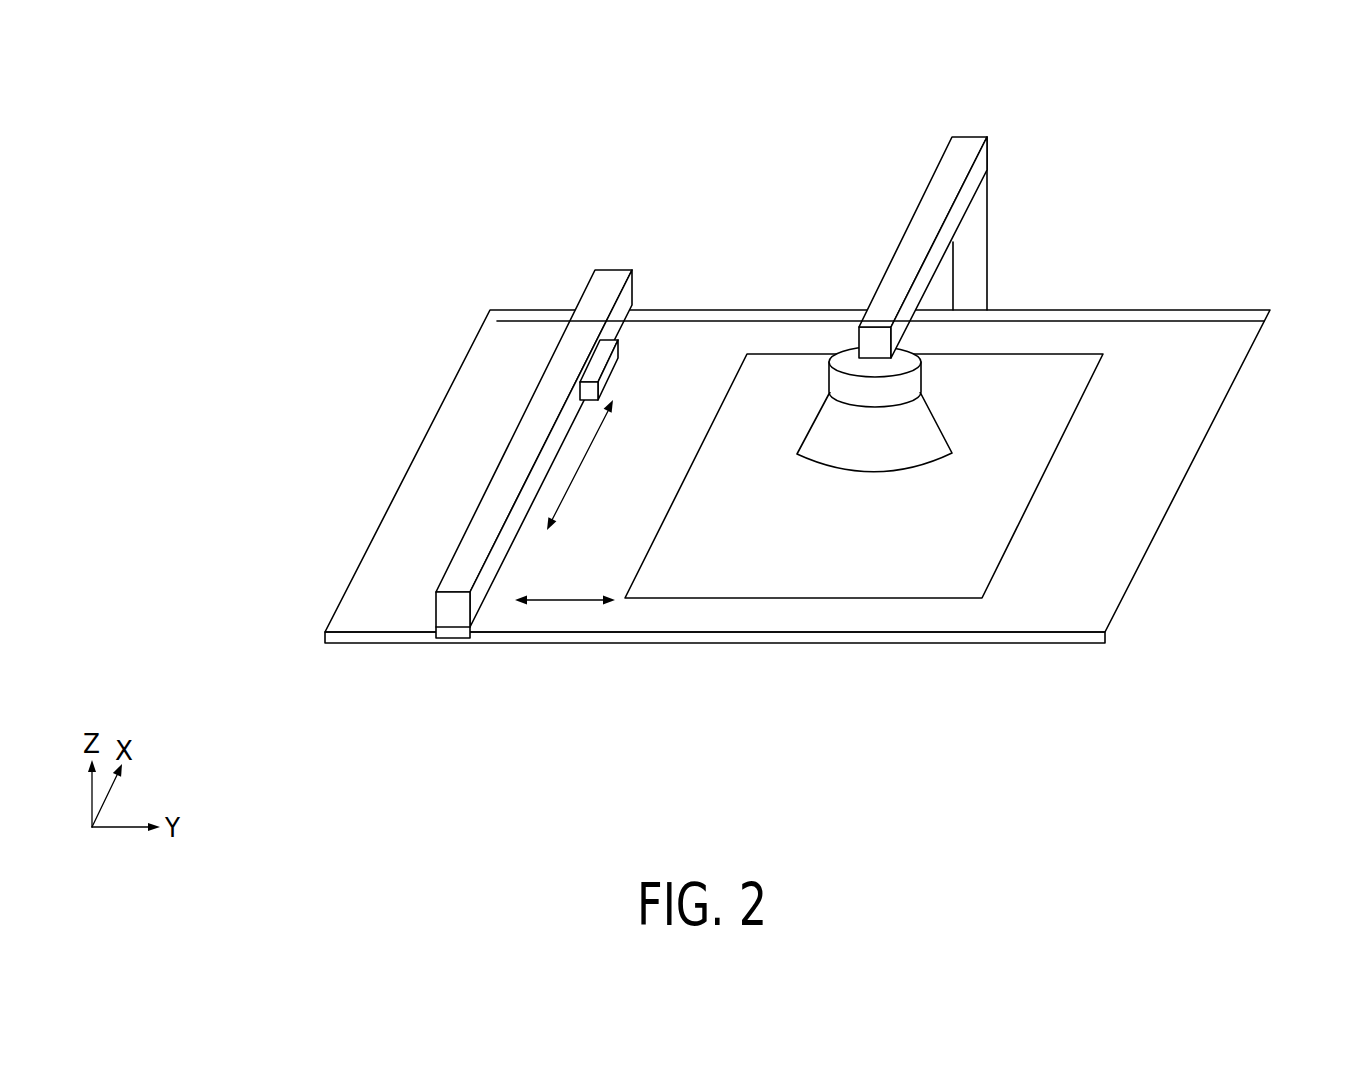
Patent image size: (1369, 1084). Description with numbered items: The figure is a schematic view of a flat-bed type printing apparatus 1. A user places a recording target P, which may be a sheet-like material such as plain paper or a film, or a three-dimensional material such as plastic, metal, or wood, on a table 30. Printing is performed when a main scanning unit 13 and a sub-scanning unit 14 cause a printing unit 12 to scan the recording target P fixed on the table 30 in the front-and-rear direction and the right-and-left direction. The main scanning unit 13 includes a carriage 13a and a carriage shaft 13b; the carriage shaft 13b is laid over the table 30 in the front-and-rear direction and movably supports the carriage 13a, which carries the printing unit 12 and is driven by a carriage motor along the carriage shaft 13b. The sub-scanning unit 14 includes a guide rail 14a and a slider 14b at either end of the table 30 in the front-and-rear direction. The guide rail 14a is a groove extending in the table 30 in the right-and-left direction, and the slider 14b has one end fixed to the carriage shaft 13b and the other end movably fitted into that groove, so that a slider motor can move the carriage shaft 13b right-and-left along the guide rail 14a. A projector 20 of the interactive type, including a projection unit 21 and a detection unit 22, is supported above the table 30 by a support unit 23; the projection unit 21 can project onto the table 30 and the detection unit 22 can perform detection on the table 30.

The printing apparatus 1 is at (819, 418).
The printing unit 12 is at (618, 360).
The main scanning unit 13 is at (791, 472).
The carriage 13a is at (529, 370).
The carriage shaft 13b is at (570, 336).
The sub-scanning unit 14 is at (808, 472).
The guide rail 14a is at (560, 308).
The slider 14b is at (540, 222).
The projector 20 is at (977, 304).
The projection unit 21 is at (922, 387).
The detection unit 22 is at (874, 432).
The support unit 23 is at (927, 215).
The table 30 is at (1220, 387).
The recording target P is at (1020, 497).